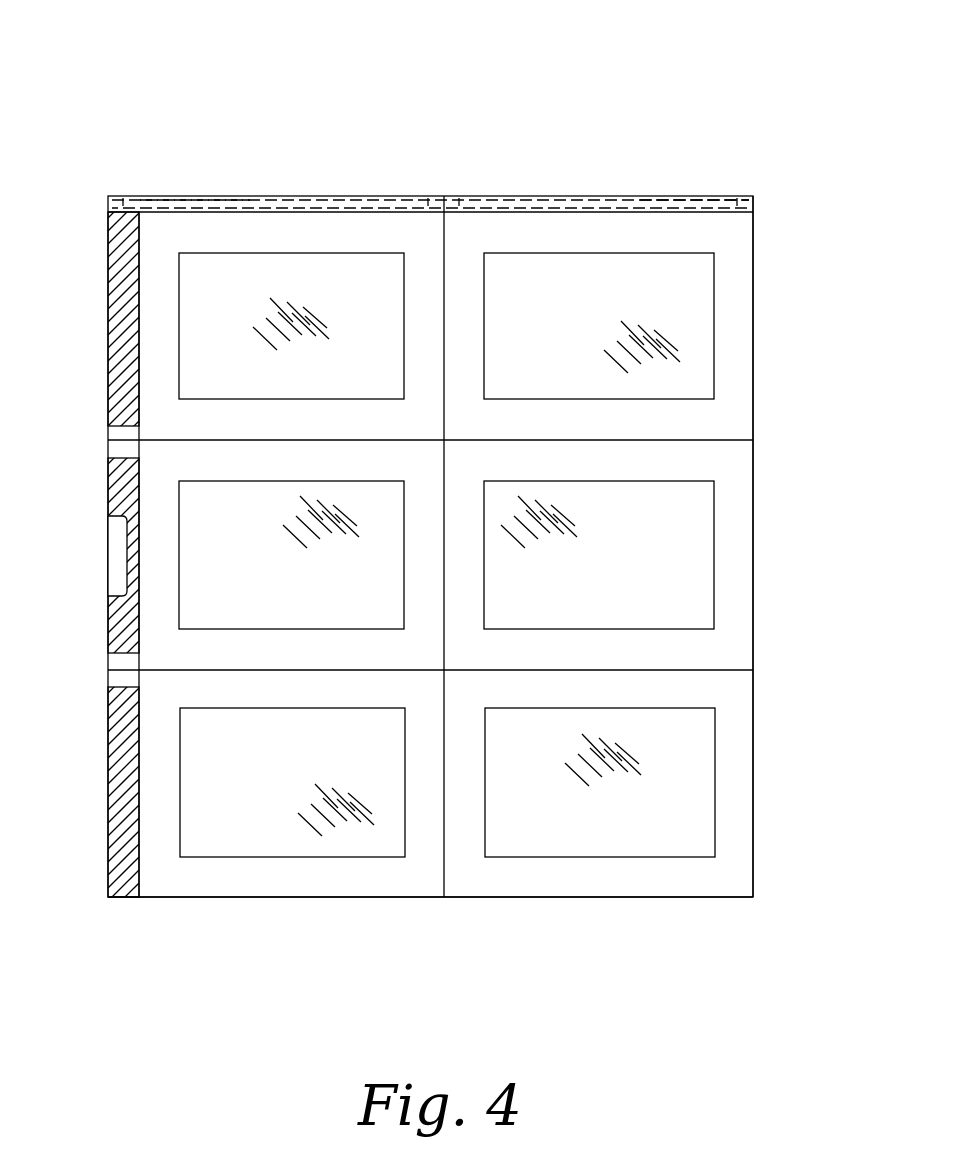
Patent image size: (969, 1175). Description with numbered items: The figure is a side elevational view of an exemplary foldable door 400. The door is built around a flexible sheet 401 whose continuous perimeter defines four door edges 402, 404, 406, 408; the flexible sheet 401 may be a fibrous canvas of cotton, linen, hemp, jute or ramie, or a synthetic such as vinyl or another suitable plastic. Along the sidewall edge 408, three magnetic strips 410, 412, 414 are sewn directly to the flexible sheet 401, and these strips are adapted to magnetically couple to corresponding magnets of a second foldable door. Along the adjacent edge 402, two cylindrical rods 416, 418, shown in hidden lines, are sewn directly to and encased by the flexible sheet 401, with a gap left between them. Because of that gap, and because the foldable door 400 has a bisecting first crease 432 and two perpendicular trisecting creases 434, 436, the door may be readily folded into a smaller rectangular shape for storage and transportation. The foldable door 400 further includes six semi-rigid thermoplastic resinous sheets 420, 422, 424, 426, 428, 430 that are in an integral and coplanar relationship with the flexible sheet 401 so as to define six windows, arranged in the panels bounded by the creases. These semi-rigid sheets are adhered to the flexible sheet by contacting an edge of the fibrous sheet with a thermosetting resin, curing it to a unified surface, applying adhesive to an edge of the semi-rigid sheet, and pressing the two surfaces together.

The foldable door 400 is at (136, 124).
The flexible sheet 401 is at (172, 230).
The door edge 402 is at (580, 195).
The door edge 404 is at (753, 347).
The door edge 406 is at (596, 897).
The sidewall edge 408 is at (110, 720).
The magnetic strip 410 is at (125, 803).
The magnetic strip 412 is at (125, 488).
The magnetic strip 414 is at (120, 288).
The cylindrical rod 416 is at (197, 208).
The cylindrical rod 418 is at (685, 200).
The semi-rigid thermoplastic resinous sheet 420 is at (695, 273).
The semi-rigid thermoplastic resinous sheet 422 is at (700, 543).
The semi-rigid thermoplastic resinous sheet 424 is at (690, 793).
The semi-rigid thermoplastic resinous sheet 426 is at (226, 830).
The semi-rigid thermoplastic resinous sheet 428 is at (203, 596).
The semi-rigid thermoplastic resinous sheet 430 is at (218, 355).
The first crease 432 is at (445, 227).
The trisecting crease 434 is at (720, 438).
The trisecting crease 436 is at (724, 667).